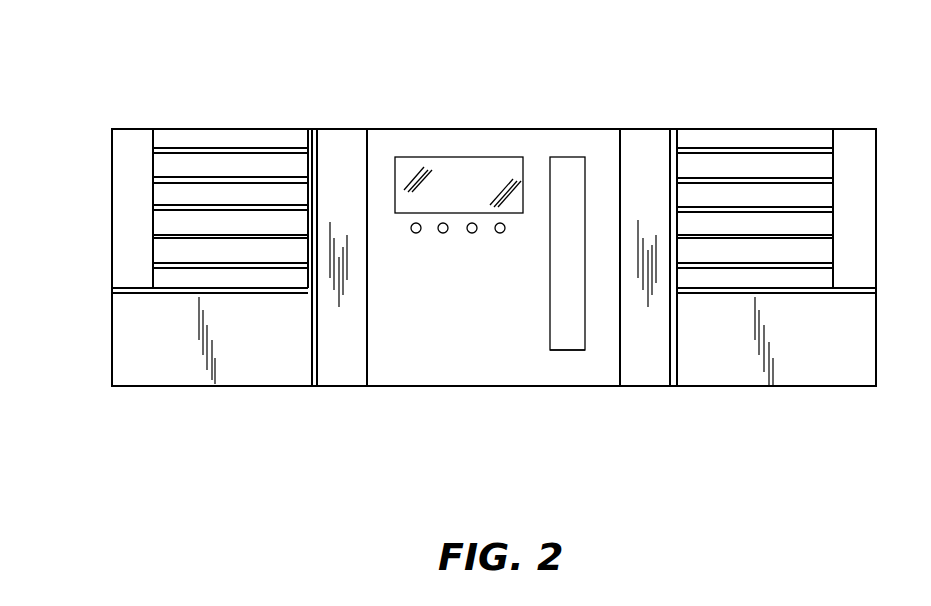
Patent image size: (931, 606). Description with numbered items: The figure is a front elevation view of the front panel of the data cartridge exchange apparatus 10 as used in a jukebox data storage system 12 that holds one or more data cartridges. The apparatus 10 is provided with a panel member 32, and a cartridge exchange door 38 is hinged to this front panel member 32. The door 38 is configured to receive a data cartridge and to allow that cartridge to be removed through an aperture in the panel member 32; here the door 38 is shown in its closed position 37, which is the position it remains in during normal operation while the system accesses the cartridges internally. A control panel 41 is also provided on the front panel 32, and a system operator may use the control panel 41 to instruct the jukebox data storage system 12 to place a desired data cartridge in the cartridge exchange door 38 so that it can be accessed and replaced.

The data cartridge exchange apparatus 10 is at (148, 61).
The jukebox data storage system 12 is at (112, 193).
The panel member 32 is at (568, 129).
The closed position 37 is at (570, 350).
The cartridge exchange door 38 is at (550, 323).
The control panel 41 is at (443, 233).